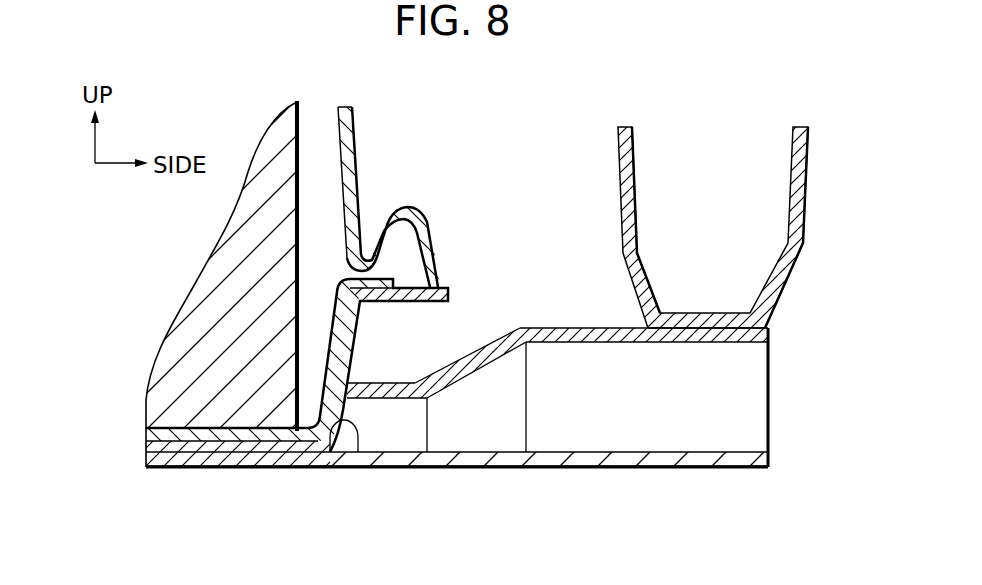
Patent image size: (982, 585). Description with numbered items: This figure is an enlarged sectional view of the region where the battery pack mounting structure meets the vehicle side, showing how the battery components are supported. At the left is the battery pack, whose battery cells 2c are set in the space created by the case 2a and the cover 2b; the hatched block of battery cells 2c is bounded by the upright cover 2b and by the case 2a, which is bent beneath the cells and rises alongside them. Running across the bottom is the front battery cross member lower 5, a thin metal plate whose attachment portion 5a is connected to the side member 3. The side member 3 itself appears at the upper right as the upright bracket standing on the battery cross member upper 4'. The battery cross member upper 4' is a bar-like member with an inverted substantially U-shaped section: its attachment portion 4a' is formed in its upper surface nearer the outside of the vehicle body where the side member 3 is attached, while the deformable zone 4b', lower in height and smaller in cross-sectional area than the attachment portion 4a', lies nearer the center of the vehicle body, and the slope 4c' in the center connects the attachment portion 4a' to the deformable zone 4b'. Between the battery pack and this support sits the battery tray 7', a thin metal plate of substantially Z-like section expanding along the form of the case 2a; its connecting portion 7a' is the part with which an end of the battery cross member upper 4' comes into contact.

The case 2a is at (333, 288).
The cover 2b is at (354, 150).
The battery cells 2c is at (250, 218).
The side member 3 is at (620, 178).
The battery cross member upper 4' is at (599, 369).
The attachment portion 4a' is at (644, 306).
The deformable zone 4b' is at (387, 359).
The slope 4c' is at (470, 344).
The front battery cross member lower 5 is at (256, 467).
The attachment portion 5a is at (585, 470).
The battery tray 7' is at (415, 245).
The connecting portion 7a' is at (352, 469).